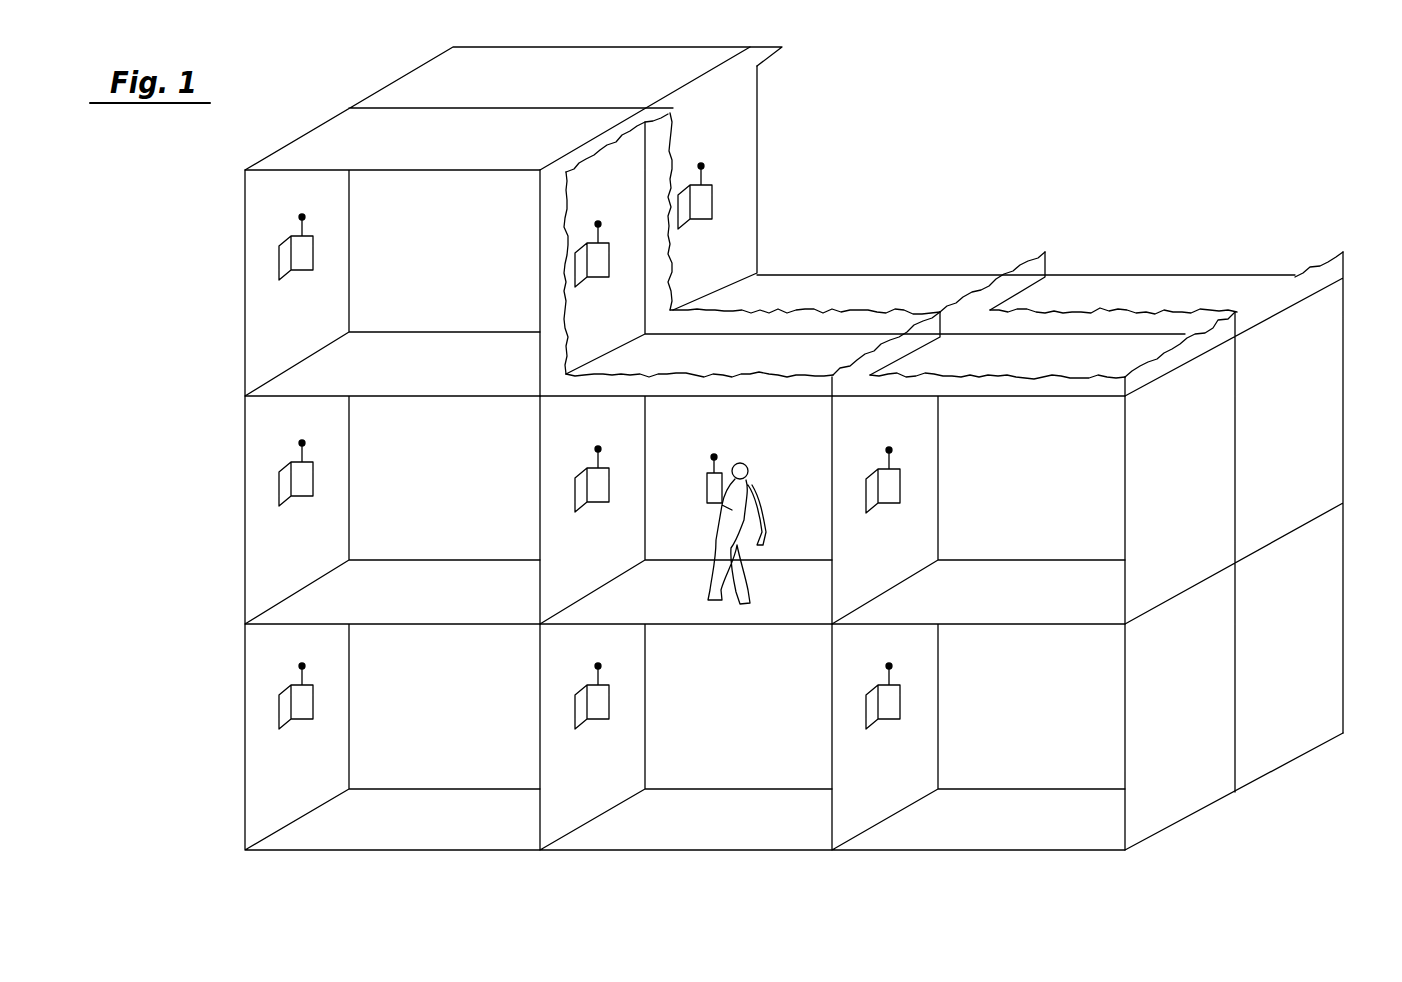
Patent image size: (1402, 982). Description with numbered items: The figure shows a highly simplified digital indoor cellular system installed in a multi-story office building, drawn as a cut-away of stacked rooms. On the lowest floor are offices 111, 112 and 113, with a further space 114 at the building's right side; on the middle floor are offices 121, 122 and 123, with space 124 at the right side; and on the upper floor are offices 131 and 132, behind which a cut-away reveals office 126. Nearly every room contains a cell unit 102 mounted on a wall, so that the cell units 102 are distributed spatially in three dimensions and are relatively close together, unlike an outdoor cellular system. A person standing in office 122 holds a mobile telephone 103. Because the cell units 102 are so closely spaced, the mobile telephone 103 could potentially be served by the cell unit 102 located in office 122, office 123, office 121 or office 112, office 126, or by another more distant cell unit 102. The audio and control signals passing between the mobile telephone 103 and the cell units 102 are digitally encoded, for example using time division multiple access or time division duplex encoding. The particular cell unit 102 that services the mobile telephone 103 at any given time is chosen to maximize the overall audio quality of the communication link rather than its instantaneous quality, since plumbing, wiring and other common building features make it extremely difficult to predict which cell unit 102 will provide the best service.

The cell unit 102 is at (303, 254).
The mobile telephone 103 is at (708, 472).
The room 111 is at (490, 711).
The office 112 is at (789, 713).
The room 113 is at (1079, 724).
The room (side) 114 is at (1297, 633).
The office 121 is at (490, 487).
The office 122 is at (812, 453).
The office 123 is at (1082, 457).
The room (side) 124 is at (1307, 382).
The office 126 is at (857, 288).
The room 131 is at (494, 261).
The room 132 is at (625, 332).